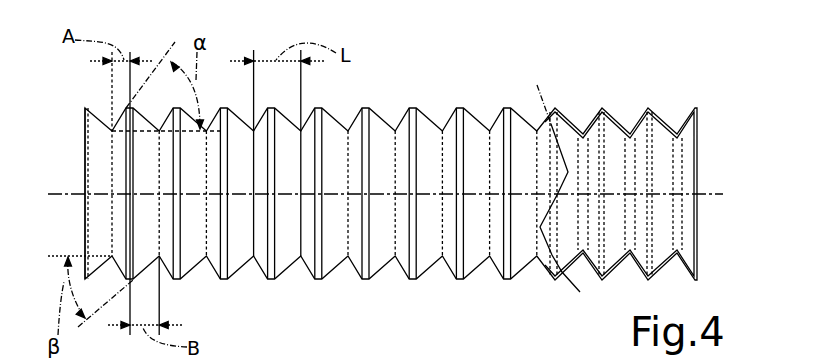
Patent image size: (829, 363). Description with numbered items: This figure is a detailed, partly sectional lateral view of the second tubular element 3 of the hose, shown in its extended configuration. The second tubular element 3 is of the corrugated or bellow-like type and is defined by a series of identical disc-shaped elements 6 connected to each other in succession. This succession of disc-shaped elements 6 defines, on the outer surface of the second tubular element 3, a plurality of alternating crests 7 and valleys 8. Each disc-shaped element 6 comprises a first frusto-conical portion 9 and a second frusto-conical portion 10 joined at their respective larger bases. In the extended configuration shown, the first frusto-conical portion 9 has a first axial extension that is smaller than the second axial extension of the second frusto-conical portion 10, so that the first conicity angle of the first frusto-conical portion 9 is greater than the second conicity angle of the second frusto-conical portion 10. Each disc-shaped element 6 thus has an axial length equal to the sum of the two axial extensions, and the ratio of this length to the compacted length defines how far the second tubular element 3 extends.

The second tubular element 3 is at (703, 147).
The disc-shaped element 6 is at (367, 108).
The crest 7 is at (461, 108).
The valley 8 is at (481, 114).
The first frusto-conical portion 9 is at (118, 165).
The second frusto-conical portion 10 is at (140, 218).